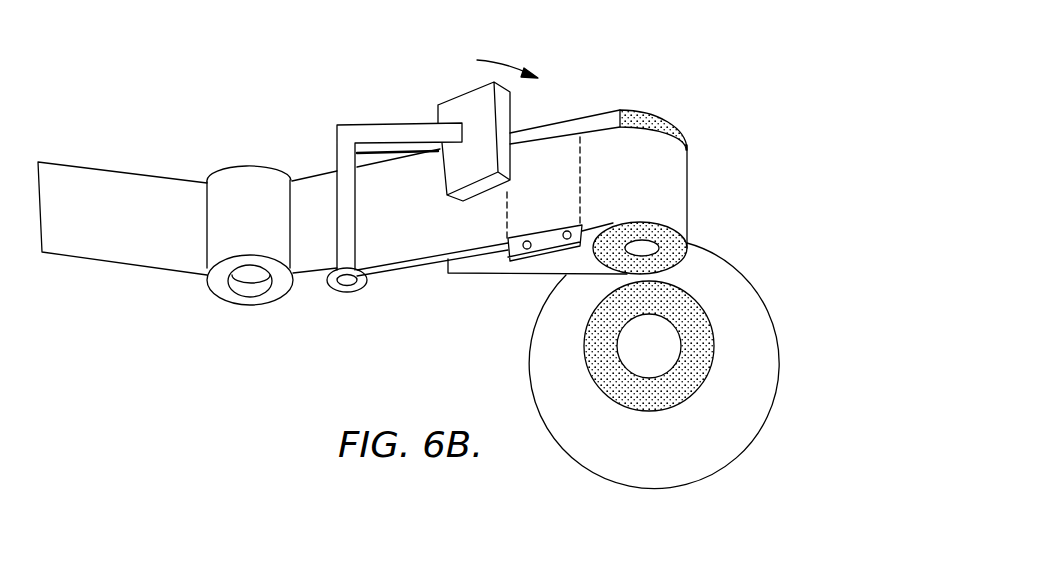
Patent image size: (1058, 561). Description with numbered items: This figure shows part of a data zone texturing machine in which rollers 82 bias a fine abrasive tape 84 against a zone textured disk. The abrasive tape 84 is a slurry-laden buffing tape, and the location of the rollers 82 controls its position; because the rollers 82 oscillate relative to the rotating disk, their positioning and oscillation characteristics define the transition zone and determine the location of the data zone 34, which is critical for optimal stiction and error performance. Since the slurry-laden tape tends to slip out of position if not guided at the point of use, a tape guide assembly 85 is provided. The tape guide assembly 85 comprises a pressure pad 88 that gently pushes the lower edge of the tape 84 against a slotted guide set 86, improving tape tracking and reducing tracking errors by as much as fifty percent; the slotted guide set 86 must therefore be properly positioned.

The data zone 34 is at (560, 373).
The rollers 82 is at (625, 107).
The fine abrasive tape 84 is at (408, 243).
The tape guide assembly 85 is at (663, 58).
The slotted guide set 86 is at (517, 262).
The pressure pad 88 is at (453, 170).